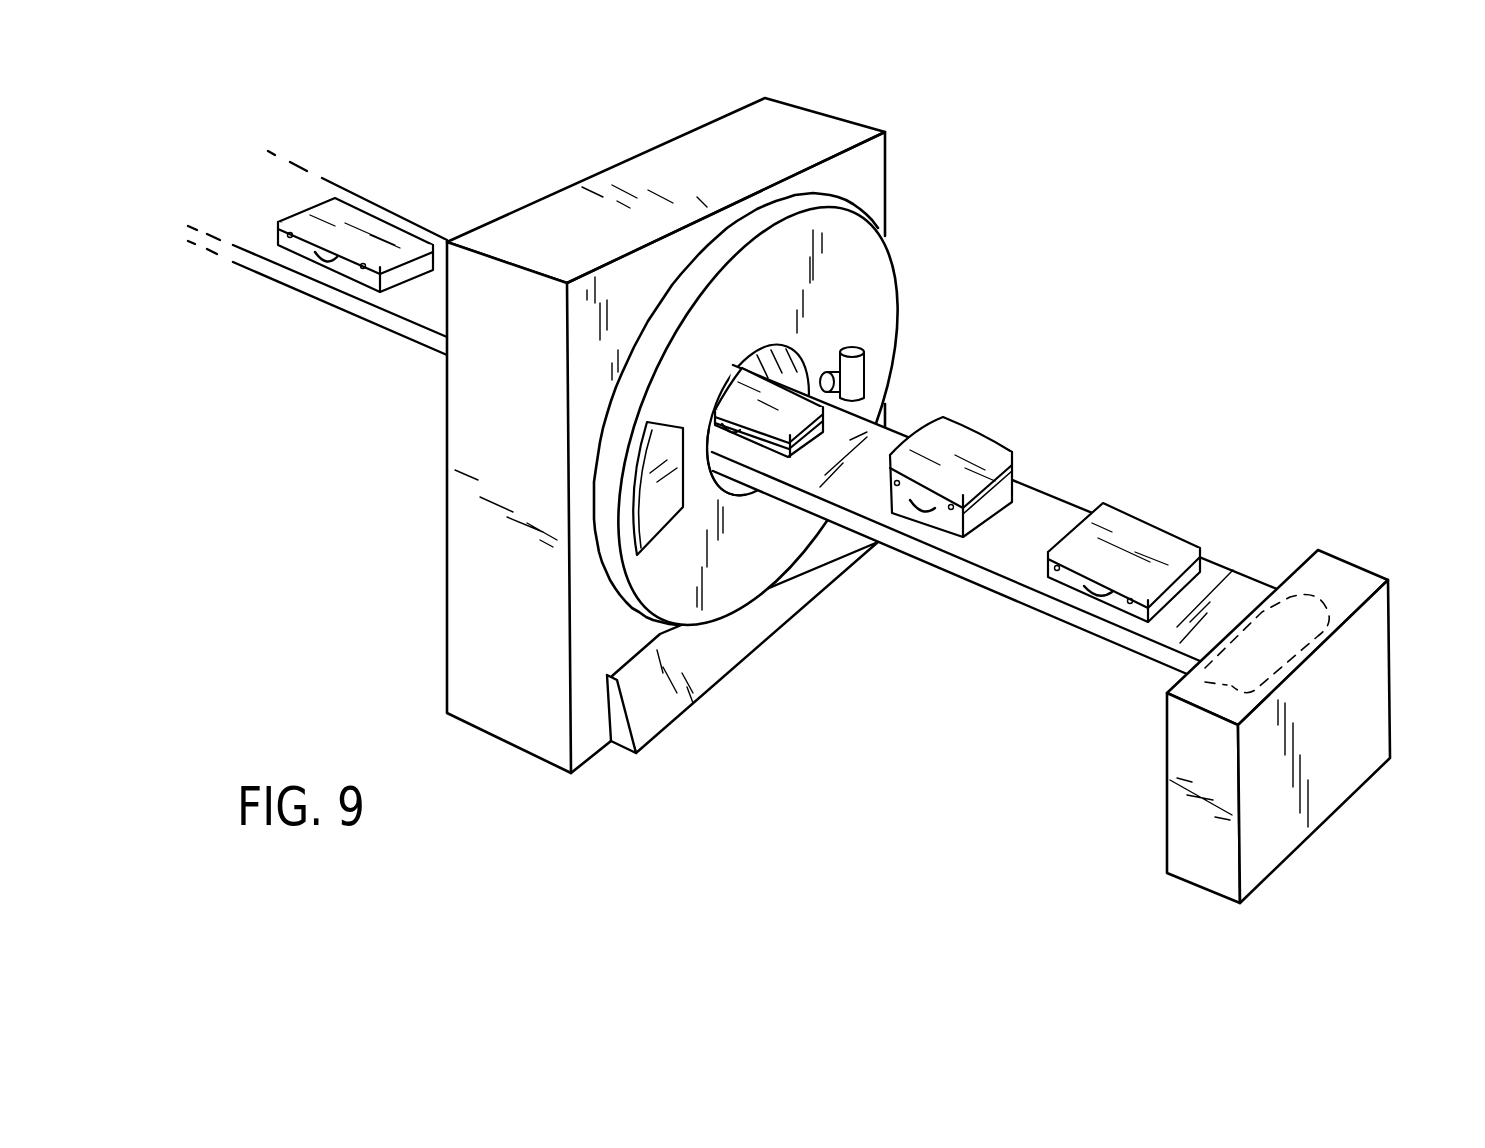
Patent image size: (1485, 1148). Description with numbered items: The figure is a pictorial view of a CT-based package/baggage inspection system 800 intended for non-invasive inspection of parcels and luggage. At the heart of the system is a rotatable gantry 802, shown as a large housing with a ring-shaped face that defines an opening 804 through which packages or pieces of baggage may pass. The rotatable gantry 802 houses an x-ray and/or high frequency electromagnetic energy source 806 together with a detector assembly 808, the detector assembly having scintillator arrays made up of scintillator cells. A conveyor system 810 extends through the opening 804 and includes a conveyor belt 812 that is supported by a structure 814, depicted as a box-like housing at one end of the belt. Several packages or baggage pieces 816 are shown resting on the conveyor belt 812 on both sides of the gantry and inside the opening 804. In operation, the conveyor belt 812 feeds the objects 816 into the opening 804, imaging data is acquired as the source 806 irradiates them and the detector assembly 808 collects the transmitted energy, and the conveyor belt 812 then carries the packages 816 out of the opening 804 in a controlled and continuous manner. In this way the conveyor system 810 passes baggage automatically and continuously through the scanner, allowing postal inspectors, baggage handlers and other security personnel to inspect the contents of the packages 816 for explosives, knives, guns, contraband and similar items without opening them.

The package/baggage inspection system 800 is at (1162, 298).
The rotatable gantry 802 is at (878, 283).
The opening 804 is at (780, 361).
The x-ray and/or high frequency electromagnetic energy source 806 is at (866, 372).
The detector assembly 808 is at (660, 525).
The conveyor system 810 is at (184, 272).
The conveyor belt 812 is at (398, 307).
The structure 814 is at (1375, 686).
The packages or baggage pieces 816 is at (372, 225).